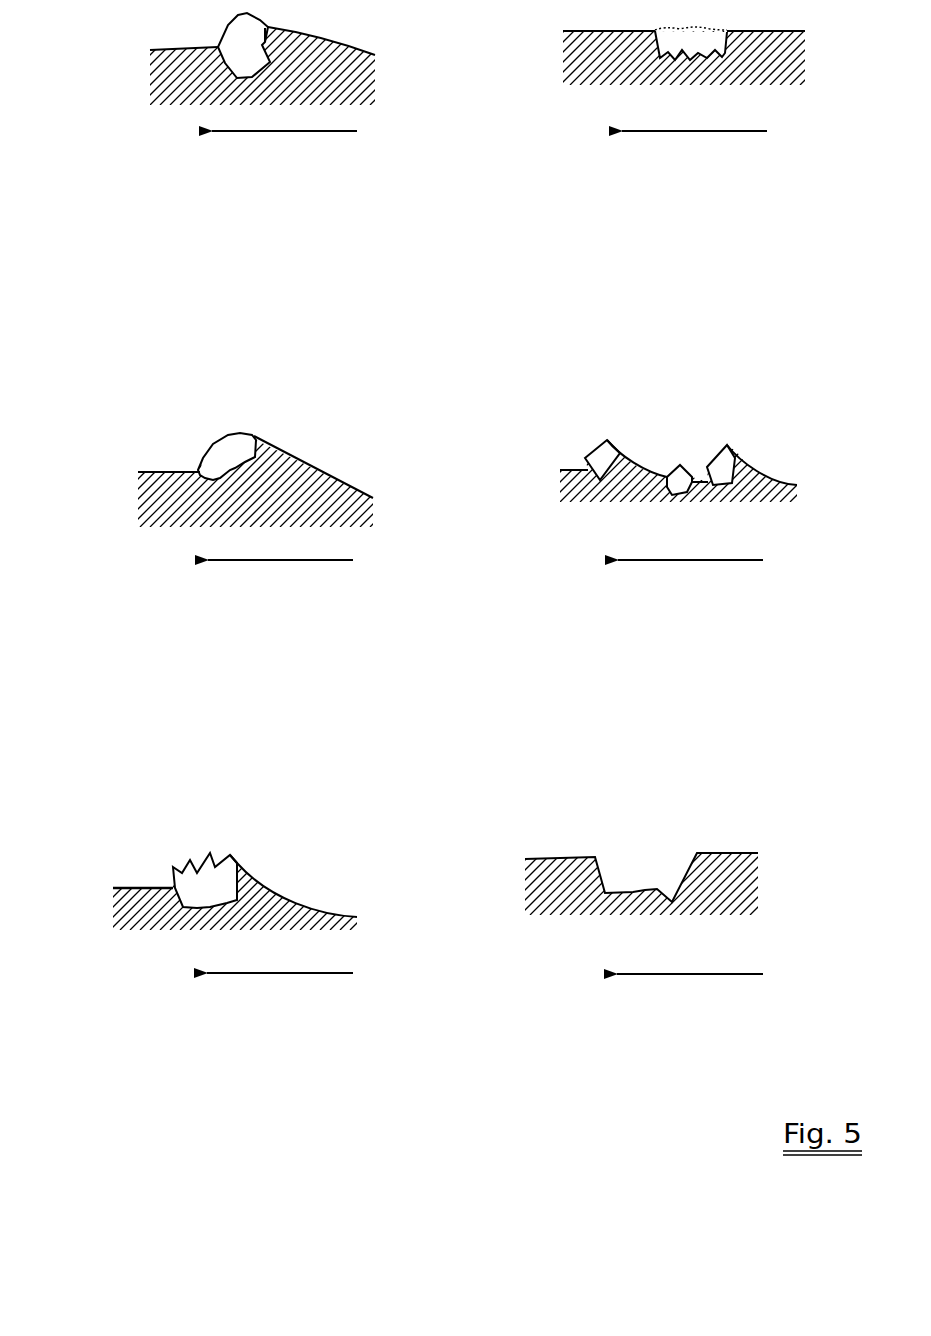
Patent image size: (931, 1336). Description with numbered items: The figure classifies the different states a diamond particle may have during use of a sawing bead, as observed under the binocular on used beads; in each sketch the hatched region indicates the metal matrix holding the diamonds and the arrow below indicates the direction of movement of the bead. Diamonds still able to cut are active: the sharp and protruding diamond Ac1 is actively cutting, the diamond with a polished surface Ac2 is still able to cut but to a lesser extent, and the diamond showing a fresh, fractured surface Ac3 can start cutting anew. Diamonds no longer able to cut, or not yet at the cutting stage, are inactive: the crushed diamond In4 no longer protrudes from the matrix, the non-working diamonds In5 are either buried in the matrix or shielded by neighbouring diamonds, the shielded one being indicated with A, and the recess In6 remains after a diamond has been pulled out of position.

The sharp and protruding diamond Ac1 is at (257, 72).
The diamond with a polished surface Ac2 is at (252, 496).
The diamond showing a fresh, fractured surface Ac3 is at (222, 913).
The crushed diamond In4 is at (664, 79).
The non-working diamonds In5 is at (657, 465).
The recess In6 is at (626, 913).
The shielded diamond A is at (672, 458).